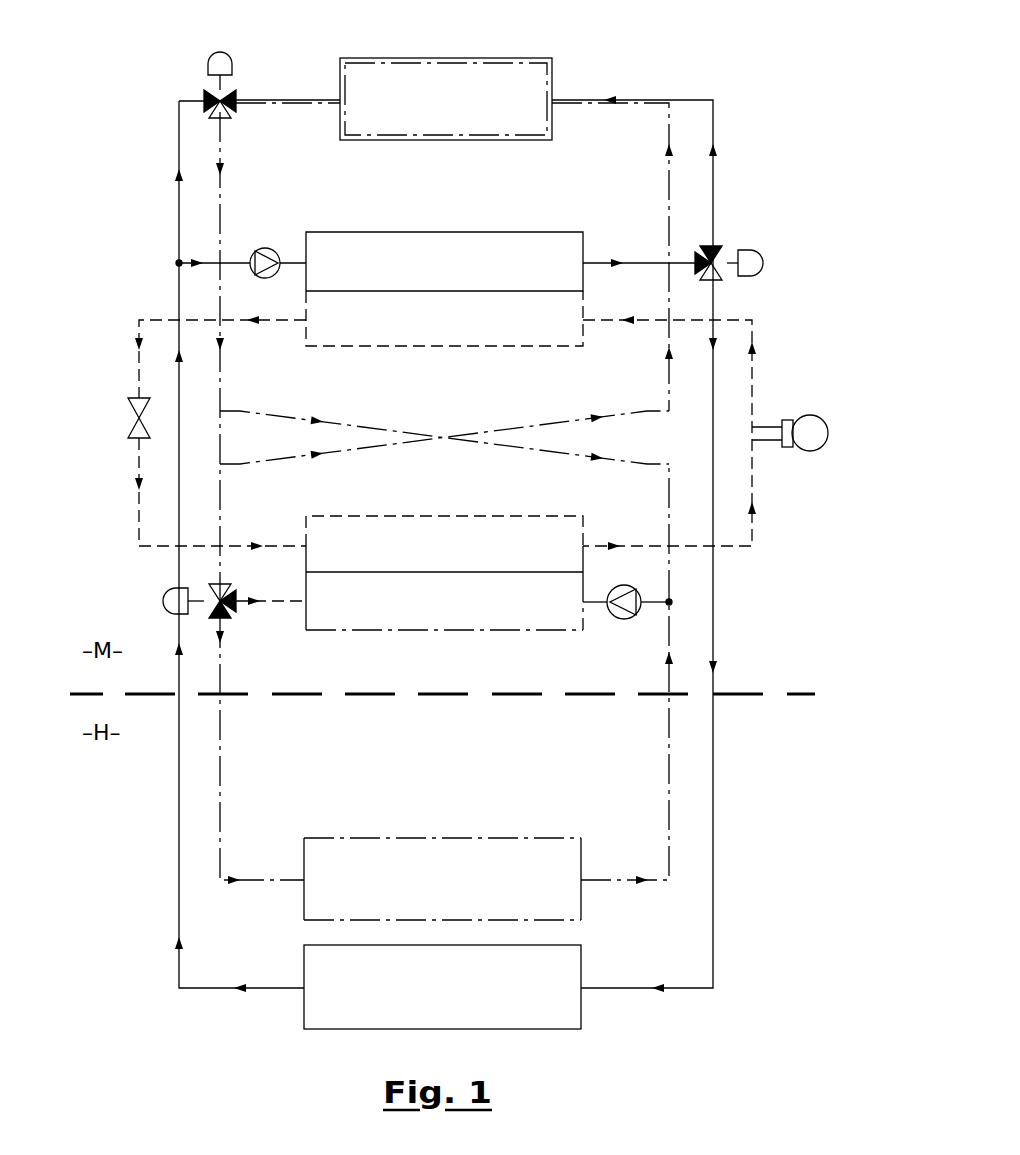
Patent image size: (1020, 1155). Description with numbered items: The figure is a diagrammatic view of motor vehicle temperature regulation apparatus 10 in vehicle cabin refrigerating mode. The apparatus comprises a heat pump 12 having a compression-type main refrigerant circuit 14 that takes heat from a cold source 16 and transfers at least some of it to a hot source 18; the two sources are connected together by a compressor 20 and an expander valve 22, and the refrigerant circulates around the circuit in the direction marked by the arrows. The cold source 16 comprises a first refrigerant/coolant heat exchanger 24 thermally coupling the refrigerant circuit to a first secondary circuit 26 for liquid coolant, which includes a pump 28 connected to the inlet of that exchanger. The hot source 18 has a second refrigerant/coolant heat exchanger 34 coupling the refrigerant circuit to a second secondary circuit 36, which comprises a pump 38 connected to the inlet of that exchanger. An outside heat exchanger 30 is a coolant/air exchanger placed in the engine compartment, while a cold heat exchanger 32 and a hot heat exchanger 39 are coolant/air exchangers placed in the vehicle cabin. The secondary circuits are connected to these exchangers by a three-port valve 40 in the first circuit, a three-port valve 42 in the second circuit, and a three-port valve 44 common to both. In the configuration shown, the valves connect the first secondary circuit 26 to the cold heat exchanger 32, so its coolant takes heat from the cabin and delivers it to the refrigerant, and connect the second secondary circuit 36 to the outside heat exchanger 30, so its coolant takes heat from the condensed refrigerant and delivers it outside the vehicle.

The temperature regulation apparatus 10 is at (744, 76).
The heat pump 12 is at (790, 384).
The main refrigerant circuit 14 is at (755, 540).
The cold source 16 is at (448, 508).
The hot source 18 is at (446, 354).
The compressor 20 is at (818, 452).
The expander valve 22 is at (128, 408).
The first refrigerant/coolant heat exchanger 24 is at (444, 588).
The first secondary circuit 26 is at (292, 618).
The pump 28 is at (614, 620).
The outside heat exchanger 30 is at (446, 99).
The cold heat exchanger 32 is at (444, 511).
The second refrigerant/coolant heat exchanger 34 is at (379, 261).
The second secondary circuit 36 is at (598, 262).
The pump 38 is at (272, 248).
The hot heat exchanger 39 is at (442, 987).
The three-port valve 40 is at (236, 596).
The three-port valve 42 is at (716, 250).
The three-port valve 44 is at (234, 90).